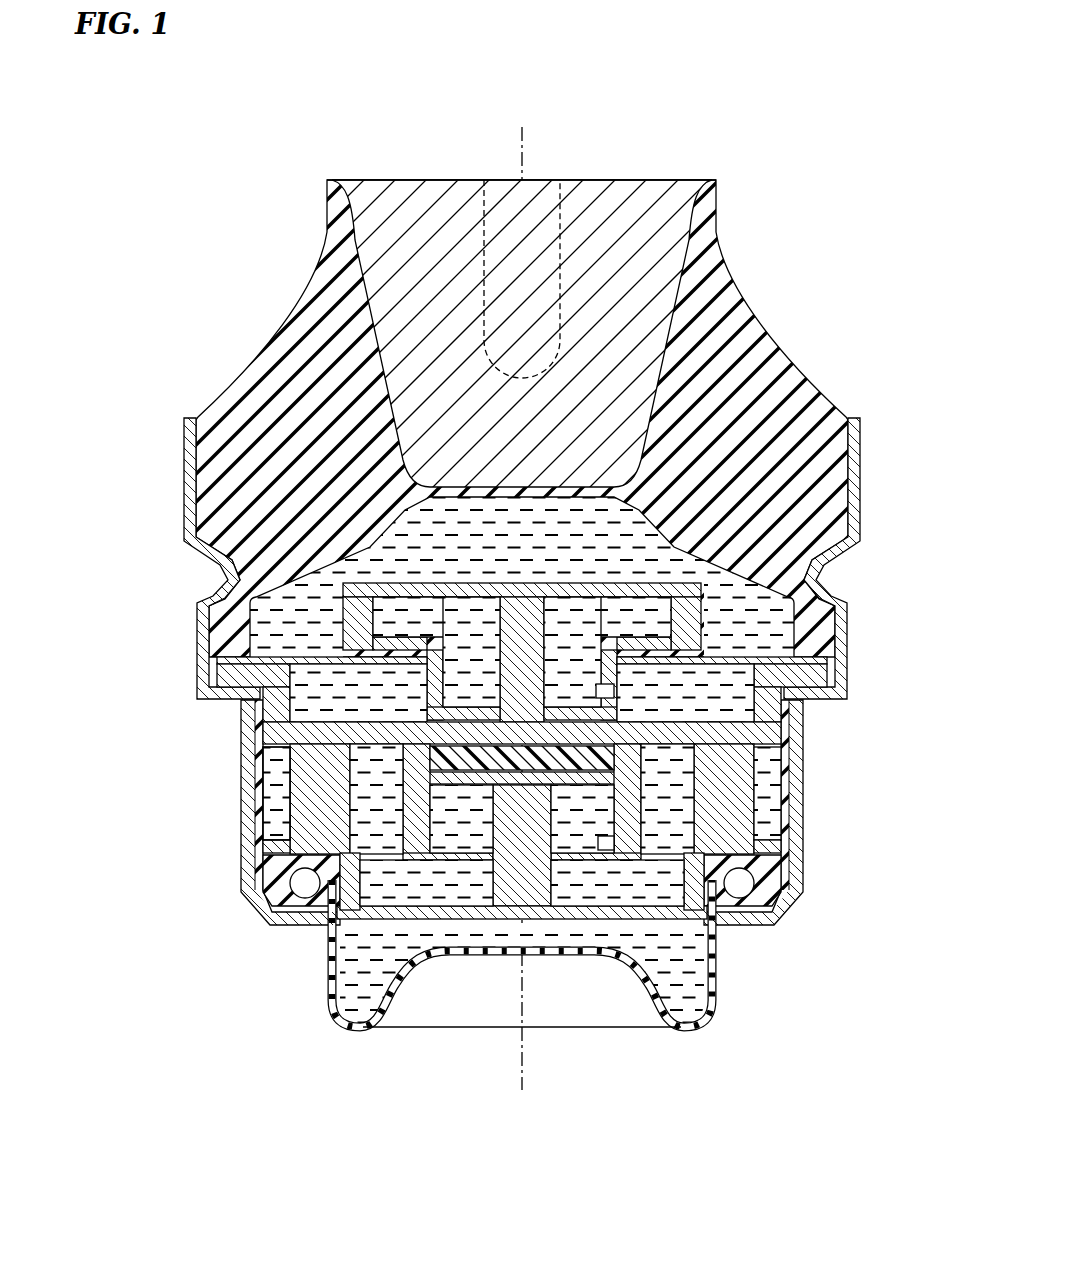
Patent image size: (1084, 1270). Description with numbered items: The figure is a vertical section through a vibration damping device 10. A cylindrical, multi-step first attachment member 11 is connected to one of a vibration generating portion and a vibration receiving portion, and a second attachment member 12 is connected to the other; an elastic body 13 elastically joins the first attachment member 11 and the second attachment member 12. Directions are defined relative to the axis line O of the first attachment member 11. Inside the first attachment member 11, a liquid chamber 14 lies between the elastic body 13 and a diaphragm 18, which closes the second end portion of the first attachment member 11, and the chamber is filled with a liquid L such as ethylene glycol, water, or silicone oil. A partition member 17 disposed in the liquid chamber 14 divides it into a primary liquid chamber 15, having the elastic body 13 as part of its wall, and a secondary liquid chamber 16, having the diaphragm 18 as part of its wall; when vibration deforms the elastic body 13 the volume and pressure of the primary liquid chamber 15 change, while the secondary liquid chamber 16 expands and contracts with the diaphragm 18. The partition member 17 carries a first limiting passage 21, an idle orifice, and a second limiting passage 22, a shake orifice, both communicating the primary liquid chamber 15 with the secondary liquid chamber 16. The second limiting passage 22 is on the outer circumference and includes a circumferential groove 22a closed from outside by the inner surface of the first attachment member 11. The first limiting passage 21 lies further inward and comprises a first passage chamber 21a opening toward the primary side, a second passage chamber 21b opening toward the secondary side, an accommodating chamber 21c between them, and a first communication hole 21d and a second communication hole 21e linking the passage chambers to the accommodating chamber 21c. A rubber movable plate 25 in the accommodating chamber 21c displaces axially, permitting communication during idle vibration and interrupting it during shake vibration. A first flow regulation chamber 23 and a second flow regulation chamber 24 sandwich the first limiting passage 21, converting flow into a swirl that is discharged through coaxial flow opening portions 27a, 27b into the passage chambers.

The vibration damping device 10 is at (513, 593).
The first attachment member 11 is at (858, 470).
The second attachment member 12 is at (372, 183).
The elastic body 13 is at (267, 363).
The liquid chamber 14 is at (445, 788).
The primary liquid chamber 15 is at (290, 628).
The secondary liquid chamber 16 is at (378, 958).
The partition member 17 is at (247, 741).
The diaphragm 18 is at (358, 1031).
The first limiting passage 21 is at (580, 747).
The first passage chamber 21a is at (605, 706).
The second passage chamber 21b is at (616, 886).
The accommodating chamber 21c is at (640, 758).
The first communication hole 21d is at (628, 766).
The second communication hole 21e is at (565, 803).
The second limiting passage 22 is at (204, 794).
The circumferential groove 22a is at (282, 788).
The first flow regulation chamber 23 is at (650, 628).
The second flow regulation chamber 24 is at (656, 900).
The movable plate 25 is at (445, 757).
The flow opening portion 27a is at (600, 693).
The flow opening portion 27b is at (608, 841).
The axis line O is at (524, 147).
The liquid L is at (345, 563).